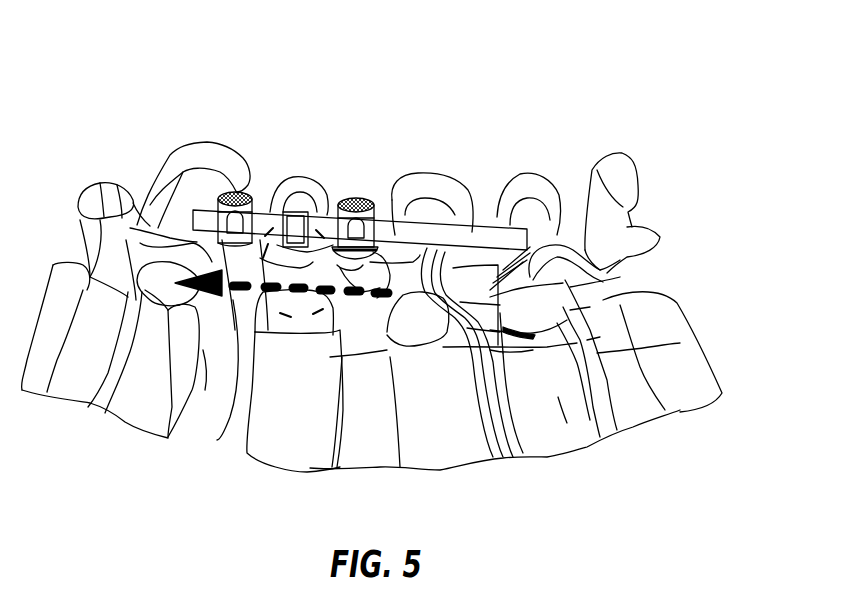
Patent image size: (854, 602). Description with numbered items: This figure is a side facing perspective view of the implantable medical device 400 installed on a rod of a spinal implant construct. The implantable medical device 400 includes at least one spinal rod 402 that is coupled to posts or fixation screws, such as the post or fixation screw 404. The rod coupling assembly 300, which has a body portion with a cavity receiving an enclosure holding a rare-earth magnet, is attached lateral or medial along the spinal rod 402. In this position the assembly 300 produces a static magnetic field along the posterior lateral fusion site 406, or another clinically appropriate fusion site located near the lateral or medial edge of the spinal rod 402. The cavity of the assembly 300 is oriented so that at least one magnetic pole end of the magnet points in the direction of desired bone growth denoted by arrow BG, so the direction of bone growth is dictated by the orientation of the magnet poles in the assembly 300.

The rod coupling assembly 300 is at (296, 215).
The implantable medical device 400 is at (290, 107).
The spinal rod 402 is at (453, 232).
The post or fixation screw 404 is at (234, 205).
The posterior lateral fusion site 406 is at (279, 306).
The arrow denoting direction of desired bone growth BG is at (311, 296).